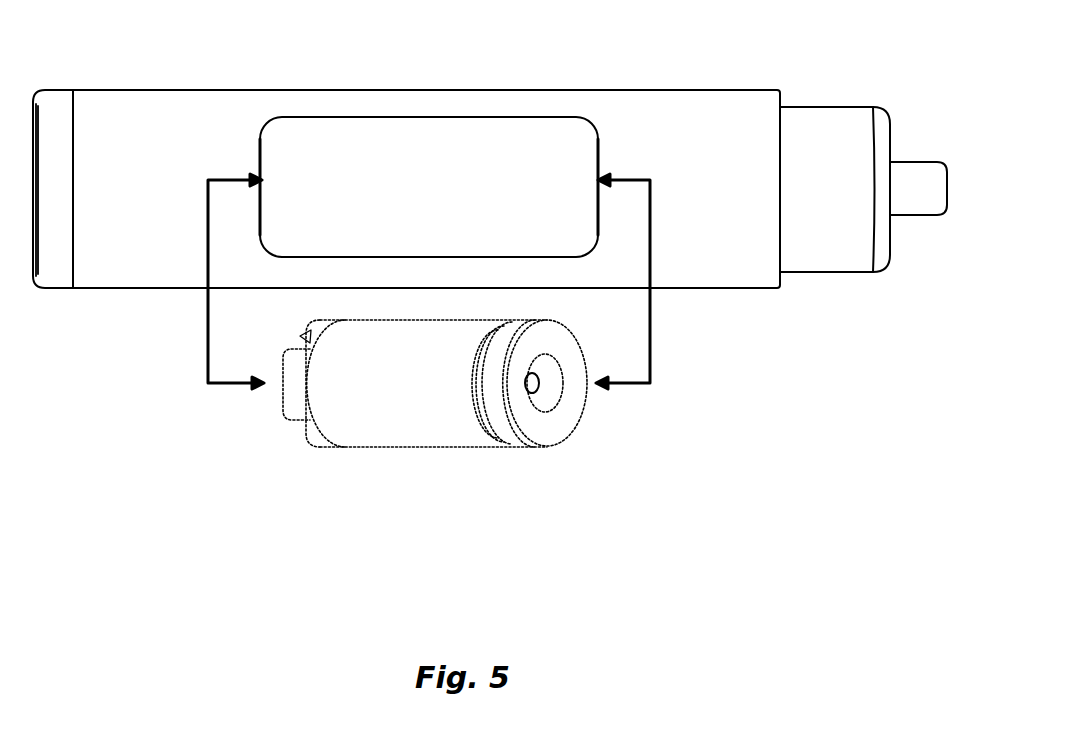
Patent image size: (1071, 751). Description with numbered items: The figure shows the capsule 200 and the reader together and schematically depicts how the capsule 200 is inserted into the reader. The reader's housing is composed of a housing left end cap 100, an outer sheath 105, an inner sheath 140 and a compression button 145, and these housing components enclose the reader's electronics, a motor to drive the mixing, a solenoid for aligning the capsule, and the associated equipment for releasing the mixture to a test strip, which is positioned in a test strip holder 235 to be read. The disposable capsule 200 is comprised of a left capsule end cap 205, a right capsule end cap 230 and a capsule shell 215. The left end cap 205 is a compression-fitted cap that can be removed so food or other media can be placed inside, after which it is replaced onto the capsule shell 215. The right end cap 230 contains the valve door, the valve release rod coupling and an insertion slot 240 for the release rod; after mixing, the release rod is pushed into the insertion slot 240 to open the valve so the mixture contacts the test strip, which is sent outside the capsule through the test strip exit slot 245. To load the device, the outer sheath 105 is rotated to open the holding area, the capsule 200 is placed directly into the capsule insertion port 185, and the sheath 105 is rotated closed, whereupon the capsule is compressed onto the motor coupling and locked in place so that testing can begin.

The housing left end cap 100 is at (50, 170).
The outer sheath 105 is at (605, 115).
The inner sheath 140 is at (802, 113).
The compression button 145 is at (937, 185).
The capsule insertion port 185 is at (286, 150).
The capsule 200 is at (297, 340).
The left capsule end cap 205 is at (297, 405).
The capsule shell 215 is at (372, 402).
The right capsule end cap 230 is at (480, 365).
The test strip holder 235 is at (498, 417).
The insertion slot for the release rod 240 is at (530, 397).
The test strip exit slot 245 is at (502, 343).